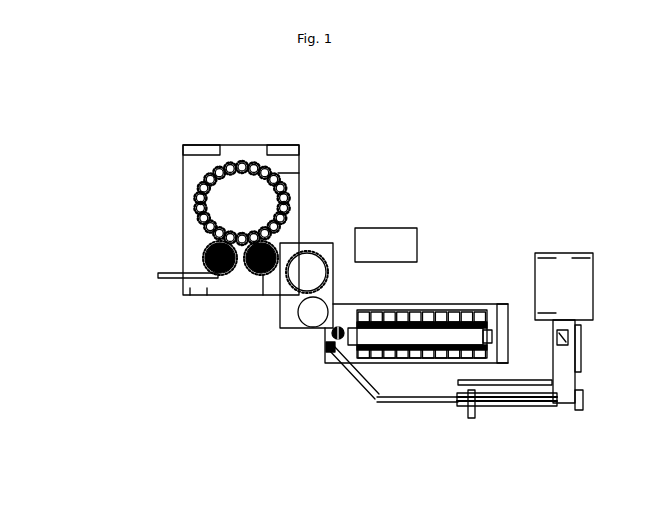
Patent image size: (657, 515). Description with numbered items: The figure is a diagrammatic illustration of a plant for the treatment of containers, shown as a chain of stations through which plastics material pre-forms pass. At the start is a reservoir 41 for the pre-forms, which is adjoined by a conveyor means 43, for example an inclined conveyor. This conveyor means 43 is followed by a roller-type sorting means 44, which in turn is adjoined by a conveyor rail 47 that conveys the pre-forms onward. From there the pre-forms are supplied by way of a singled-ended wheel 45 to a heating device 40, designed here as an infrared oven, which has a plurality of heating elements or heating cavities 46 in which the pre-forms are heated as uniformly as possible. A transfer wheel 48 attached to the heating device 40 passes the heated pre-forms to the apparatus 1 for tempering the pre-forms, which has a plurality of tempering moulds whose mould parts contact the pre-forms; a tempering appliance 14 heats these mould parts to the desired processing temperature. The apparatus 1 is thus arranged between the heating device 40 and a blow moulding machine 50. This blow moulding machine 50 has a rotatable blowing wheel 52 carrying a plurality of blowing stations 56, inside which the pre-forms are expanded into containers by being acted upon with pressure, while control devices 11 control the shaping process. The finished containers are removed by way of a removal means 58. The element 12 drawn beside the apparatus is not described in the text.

The apparatus 1 is at (322, 235).
The control devices 11 is at (210, 148).
The feeding unit 12 is at (307, 273).
The tempering appliance 14 is at (400, 240).
The heating device 40 is at (446, 294).
The reservoir 41 is at (587, 257).
The conveyor means 43 is at (575, 365).
The roller-type sorting means 44 is at (537, 407).
The singled-ended wheel 45 is at (330, 350).
The heating elements or heating cavities 46 is at (467, 317).
The conveyor rail 47 is at (373, 398).
The transfer wheel 48 is at (298, 330).
The blow moulding machine 50 is at (324, 150).
The rotatable blowing wheel 52 is at (250, 202).
The blowing stations 56 is at (195, 192).
The removal means 58 is at (170, 278).